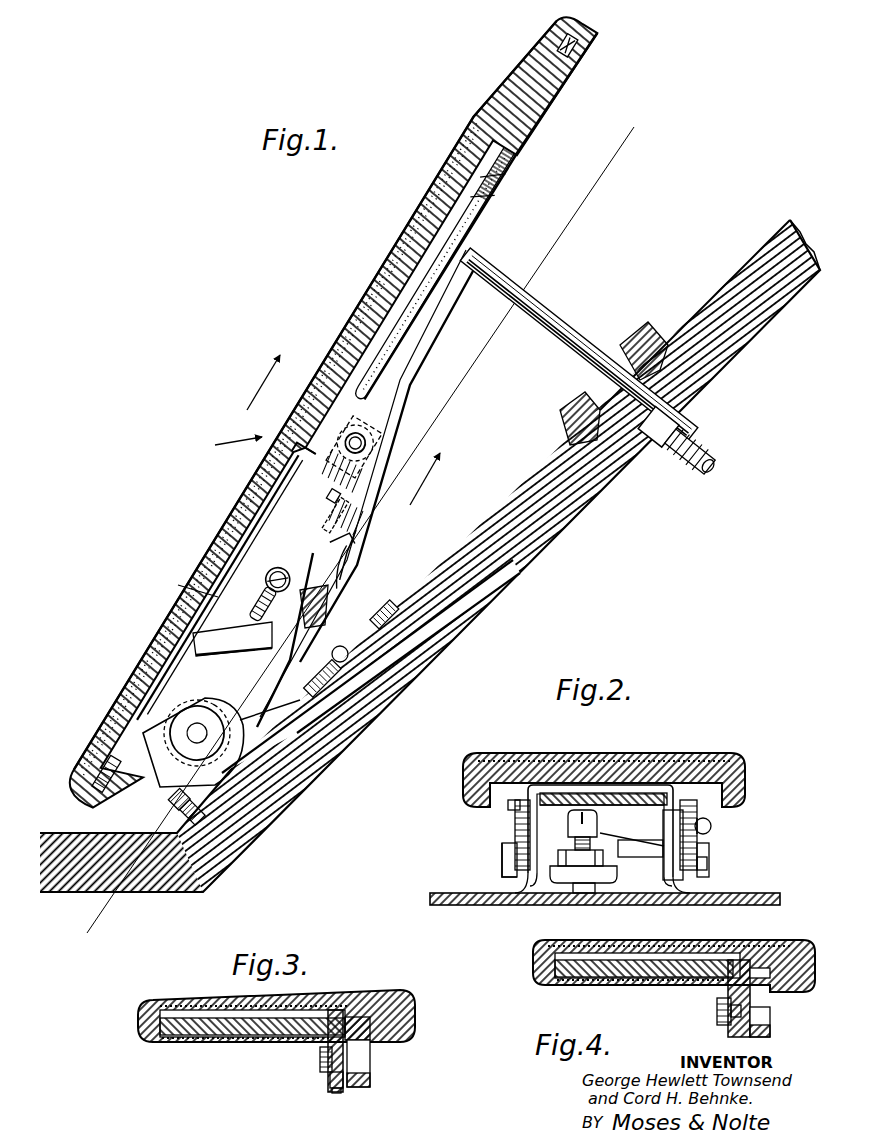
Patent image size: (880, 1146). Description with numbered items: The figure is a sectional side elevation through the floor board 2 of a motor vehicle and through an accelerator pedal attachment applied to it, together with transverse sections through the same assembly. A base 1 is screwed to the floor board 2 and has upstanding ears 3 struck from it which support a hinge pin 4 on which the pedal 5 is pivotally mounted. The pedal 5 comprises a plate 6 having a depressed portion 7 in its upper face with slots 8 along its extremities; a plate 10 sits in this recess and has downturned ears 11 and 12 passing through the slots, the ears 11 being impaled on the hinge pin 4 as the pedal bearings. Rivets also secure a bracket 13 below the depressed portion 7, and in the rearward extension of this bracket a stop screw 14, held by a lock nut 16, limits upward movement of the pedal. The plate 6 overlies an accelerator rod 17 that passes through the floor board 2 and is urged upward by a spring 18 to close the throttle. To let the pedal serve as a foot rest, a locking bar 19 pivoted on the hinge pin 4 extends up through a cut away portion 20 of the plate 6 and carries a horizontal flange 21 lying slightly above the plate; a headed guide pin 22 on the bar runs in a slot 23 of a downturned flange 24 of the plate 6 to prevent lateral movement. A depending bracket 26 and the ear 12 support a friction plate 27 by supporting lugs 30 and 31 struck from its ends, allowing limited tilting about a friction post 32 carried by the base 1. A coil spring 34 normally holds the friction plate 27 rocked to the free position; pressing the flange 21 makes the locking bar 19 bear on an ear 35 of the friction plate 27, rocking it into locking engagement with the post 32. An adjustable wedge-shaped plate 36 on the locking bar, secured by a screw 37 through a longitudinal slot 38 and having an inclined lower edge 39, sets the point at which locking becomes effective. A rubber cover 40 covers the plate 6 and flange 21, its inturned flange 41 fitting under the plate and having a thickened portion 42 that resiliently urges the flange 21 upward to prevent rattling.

In FIG. 1, the base 1 is at (386, 610).
In FIG. 2, the base 1 is at (462, 896).
In FIG. 1, the floor board 2 is at (538, 546).
In FIG. 1, the upstanding ears 3 is at (262, 712).
In FIG. 2, the upstanding ears 3 is at (515, 872).
In FIG. 2, the hinge pin 4 is at (648, 846).
In FIG. 1, the pedal 5 is at (231, 446).
In FIG. 1, the plate 6 is at (191, 586).
In FIG. 2, the plate 6 is at (508, 790).
In FIG. 3, the plate 6 is at (226, 1030).
In FIG. 4, the plate 6 is at (634, 968).
In FIG. 2, the depressed portion 7 is at (582, 796).
In FIG. 2, the slots 8 is at (536, 785).
In FIG. 1, the plate 10 is at (622, 97).
In FIG. 2, the plate 10 is at (626, 788).
In FIG. 2, the downturned ears 11 is at (530, 822).
In FIG. 1, the downturned ear 12 is at (216, 648).
In FIG. 1, the bracket 13 is at (190, 804).
In FIG. 2, the bracket 13 is at (566, 885).
In FIG. 1, the stop screw 14 is at (197, 733).
In FIG. 2, the stop screw 14 is at (598, 820).
In FIG. 1, the lock nut 16 is at (176, 792).
In FIG. 2, the lock nut 16 is at (604, 860).
In FIG. 1, the accelerator rod 17 is at (552, 318).
In FIG. 1, the spring 18 is at (690, 448).
In FIG. 1, the locking bar 19 is at (385, 402).
In FIG. 2, the locking bar 19 is at (680, 870).
In FIG. 3, the locking bar 19 is at (360, 1040).
In FIG. 4, the locking bar 19 is at (752, 992).
In FIG. 1, the cut away portion 20 is at (488, 185).
In FIG. 1, the horizontal flange 21 is at (330, 411).
In FIG. 3, the horizontal flange 21 is at (366, 1010).
In FIG. 4, the horizontal flange 21 is at (764, 962).
In FIG. 1, the headed guide pin 22 is at (355, 442).
In FIG. 3, the headed guide pin 22 is at (319, 1058).
In FIG. 4, the headed guide pin 22 is at (716, 1010).
In FIG. 1, the slot 23 is at (355, 443).
In FIG. 3, the slot 23 is at (330, 1078).
In FIG. 1, the downturned flange 24 is at (353, 446).
In FIG. 3, the downturned flange 24 is at (334, 1093).
In FIG. 1, the depending bracket 26 is at (335, 514).
In FIG. 1, the friction plate 27 is at (344, 540).
In FIG. 2, the friction plate 27 is at (503, 852).
In FIG. 1, the supporting lug 30 is at (333, 496).
In FIG. 1, the supporting lug 31 is at (266, 676).
In FIG. 1, the friction post 32 is at (350, 632).
In FIG. 2, the coil spring 34 is at (512, 806).
In FIG. 1, the ear 35 is at (346, 559).
In FIG. 2, the ear 35 is at (708, 866).
In FIG. 1, the wedge-shaped plate 36 is at (223, 585).
In FIG. 2, the wedge-shaped plate 36 is at (710, 826).
In FIG. 1, the screw 37 is at (277, 579).
In FIG. 2, the screw 37 is at (708, 834).
In FIG. 1, the longitudinal slot 38 is at (263, 604).
In FIG. 1, the lower edge 39 is at (286, 648).
In FIG. 1, the rubber cover 40 is at (315, 395).
In FIG. 1, the inturned flange 41 is at (567, 45).
In FIG. 3, the inturned flange 41 is at (176, 1040).
In FIG. 4, the inturned flange 41 is at (575, 983).
In FIG. 1, the thickened portion 42 is at (475, 214).
In FIG. 3, the thickened portion 42 is at (385, 1038).
In FIG. 4, the thickened portion 42 is at (786, 988).